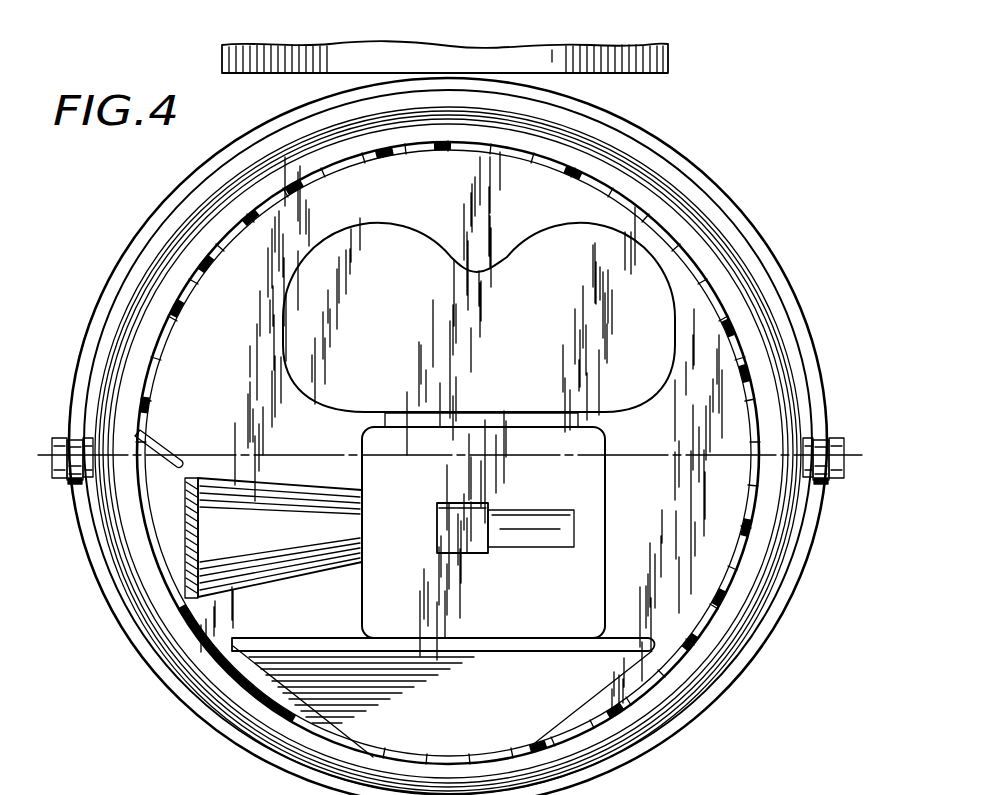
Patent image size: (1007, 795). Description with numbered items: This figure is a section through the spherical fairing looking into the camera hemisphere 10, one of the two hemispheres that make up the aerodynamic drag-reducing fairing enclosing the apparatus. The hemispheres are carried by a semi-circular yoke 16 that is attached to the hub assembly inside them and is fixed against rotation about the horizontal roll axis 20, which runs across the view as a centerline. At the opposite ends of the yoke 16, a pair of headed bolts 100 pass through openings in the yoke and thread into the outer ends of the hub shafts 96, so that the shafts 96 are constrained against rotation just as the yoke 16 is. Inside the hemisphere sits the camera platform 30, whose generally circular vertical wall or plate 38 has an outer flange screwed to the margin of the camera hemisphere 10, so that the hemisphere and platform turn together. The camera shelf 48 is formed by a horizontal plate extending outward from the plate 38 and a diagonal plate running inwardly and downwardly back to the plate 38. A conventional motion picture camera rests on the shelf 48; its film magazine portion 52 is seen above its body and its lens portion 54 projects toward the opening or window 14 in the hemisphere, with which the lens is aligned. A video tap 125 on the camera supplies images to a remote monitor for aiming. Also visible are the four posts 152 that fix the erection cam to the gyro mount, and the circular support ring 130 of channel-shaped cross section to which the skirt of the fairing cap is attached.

The camera hemisphere 10 is at (707, 227).
The opening or window 14 is at (185, 607).
The semi-circular yoke 16 is at (692, 166).
The roll axis 20 is at (623, 453).
The camera platform 30 is at (238, 318).
The vertical wall or plate 38 is at (698, 597).
The camera shelf 48 is at (612, 640).
The film magazine portion 52 is at (597, 488).
The lens portion 54 is at (302, 572).
The hub shafts 96 is at (88, 484).
The headed bolts 100 is at (60, 437).
The video tap 125 is at (477, 554).
The circular support ring 130 is at (668, 56).
The posts 152 is at (398, 233).